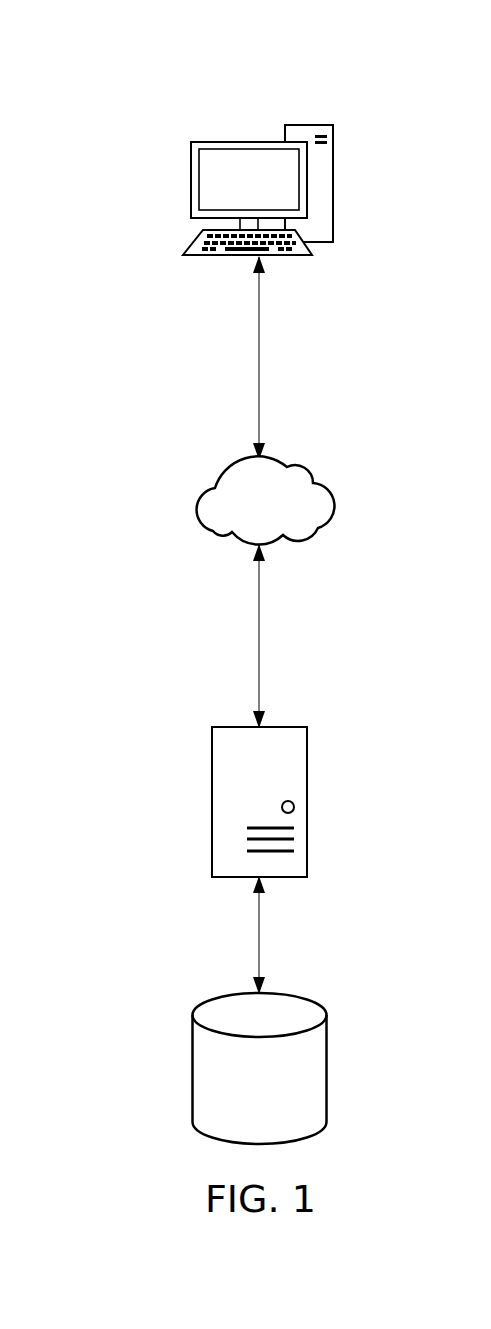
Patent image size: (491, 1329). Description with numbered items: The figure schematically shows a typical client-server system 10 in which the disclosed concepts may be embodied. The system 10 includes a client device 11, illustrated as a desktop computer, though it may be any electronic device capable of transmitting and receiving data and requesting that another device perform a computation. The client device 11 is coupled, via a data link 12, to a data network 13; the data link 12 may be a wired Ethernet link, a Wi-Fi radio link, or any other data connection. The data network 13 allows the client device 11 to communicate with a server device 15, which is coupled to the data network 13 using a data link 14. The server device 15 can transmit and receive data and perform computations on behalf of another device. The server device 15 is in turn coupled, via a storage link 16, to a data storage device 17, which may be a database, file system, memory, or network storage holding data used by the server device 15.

The system 10 is at (104, 42).
The client device 11 is at (258, 142).
The data link 12 is at (260, 392).
The data network 13 is at (220, 470).
The data link 14 is at (259, 633).
The server device 15 is at (230, 727).
The storage link 16 is at (259, 953).
The data storage device 17 is at (192, 1068).